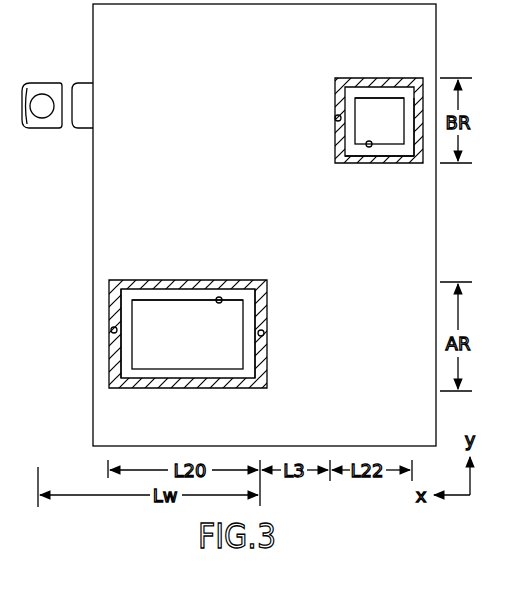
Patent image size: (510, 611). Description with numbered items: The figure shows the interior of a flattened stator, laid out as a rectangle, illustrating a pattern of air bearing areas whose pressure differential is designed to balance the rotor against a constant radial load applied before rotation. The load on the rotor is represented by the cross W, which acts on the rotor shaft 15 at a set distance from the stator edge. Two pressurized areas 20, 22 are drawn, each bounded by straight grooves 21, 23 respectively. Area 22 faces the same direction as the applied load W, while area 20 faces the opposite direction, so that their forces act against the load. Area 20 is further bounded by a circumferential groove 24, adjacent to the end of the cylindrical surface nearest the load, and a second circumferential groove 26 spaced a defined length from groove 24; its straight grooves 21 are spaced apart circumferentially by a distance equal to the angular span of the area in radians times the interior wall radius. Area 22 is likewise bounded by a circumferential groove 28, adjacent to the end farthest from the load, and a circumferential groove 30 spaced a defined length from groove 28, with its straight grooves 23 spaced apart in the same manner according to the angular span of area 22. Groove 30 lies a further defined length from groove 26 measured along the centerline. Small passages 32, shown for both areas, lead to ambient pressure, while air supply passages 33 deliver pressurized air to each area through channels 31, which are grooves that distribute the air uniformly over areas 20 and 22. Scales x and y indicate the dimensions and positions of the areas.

The load W is at (42, 96).
The rotor shaft 15 is at (37, 126).
The pressurized area 20 is at (140, 312).
The straight grooves 21 is at (176, 282).
The pressurized area 22 is at (381, 107).
The straight grooves 23 is at (408, 83).
The circumferential groove 24 is at (110, 298).
The second circumferential groove 26 is at (264, 288).
The circumferential groove 28 is at (410, 131).
The circumferential groove 30 is at (338, 163).
The channels 31 is at (200, 298).
The passages 32 is at (111, 330).
The air supply passages 33 is at (220, 296).